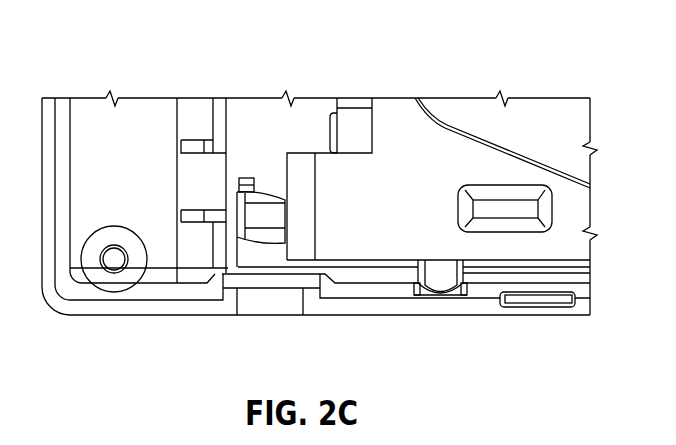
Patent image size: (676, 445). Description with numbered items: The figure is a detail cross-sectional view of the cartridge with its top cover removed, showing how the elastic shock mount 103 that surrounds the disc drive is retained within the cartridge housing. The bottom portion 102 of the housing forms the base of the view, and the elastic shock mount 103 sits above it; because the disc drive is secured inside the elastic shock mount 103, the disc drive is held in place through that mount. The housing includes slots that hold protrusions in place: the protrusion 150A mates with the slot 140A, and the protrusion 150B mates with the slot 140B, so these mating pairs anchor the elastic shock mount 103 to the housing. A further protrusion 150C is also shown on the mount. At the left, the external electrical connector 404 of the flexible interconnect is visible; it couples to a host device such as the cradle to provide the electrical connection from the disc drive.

The bottom portion 102 is at (333, 305).
The elastic shock mount 103 is at (395, 208).
The external electrical connector 404 is at (135, 181).
The slot 140A is at (242, 178).
The slot 140B is at (467, 287).
The protrusion 150A is at (268, 205).
The protrusion 150B is at (440, 267).
The protrusion 150C is at (523, 212).